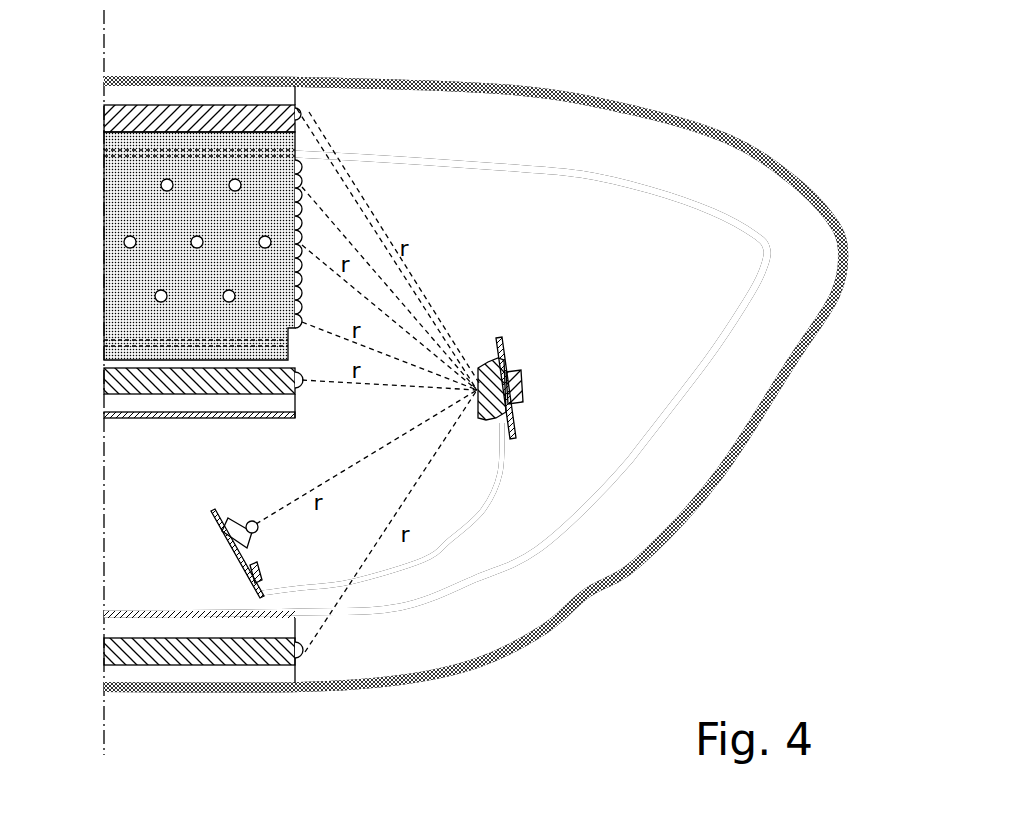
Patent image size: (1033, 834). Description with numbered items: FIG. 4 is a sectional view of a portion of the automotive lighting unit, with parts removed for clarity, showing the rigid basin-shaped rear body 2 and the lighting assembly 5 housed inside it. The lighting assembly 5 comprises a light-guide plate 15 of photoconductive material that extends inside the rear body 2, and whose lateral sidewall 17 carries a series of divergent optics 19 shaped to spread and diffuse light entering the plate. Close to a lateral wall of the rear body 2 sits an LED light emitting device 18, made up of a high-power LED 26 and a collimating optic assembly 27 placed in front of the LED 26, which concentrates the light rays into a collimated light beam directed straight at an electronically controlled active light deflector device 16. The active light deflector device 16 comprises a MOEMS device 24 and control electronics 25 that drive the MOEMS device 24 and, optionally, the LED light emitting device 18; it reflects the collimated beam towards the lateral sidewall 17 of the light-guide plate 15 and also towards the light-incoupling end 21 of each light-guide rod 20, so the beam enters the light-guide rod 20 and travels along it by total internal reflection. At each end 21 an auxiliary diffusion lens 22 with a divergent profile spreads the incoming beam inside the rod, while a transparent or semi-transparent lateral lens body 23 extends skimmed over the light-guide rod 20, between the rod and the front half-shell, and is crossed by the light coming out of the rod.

The rear body 2 is at (718, 478).
The lighting assembly 5 is at (447, 250).
The light-guide plate 15 is at (130, 201).
The active light deflector device 16 is at (548, 327).
The lateral sidewall 17 is at (308, 185).
The LED light emitting device 18 is at (157, 526).
The divergent optics 19 is at (306, 236).
The light-guide rod 20 is at (185, 118).
The end of light-guide rod 21 is at (306, 108).
The auxiliary diffusion lens 22 is at (304, 118).
The lateral lens body 23 is at (128, 95).
The MOEMS device 24 is at (490, 362).
The control electronics 25 is at (523, 395).
The high-power LED 26 is at (232, 537).
The collimating optic assembly 27 is at (252, 519).